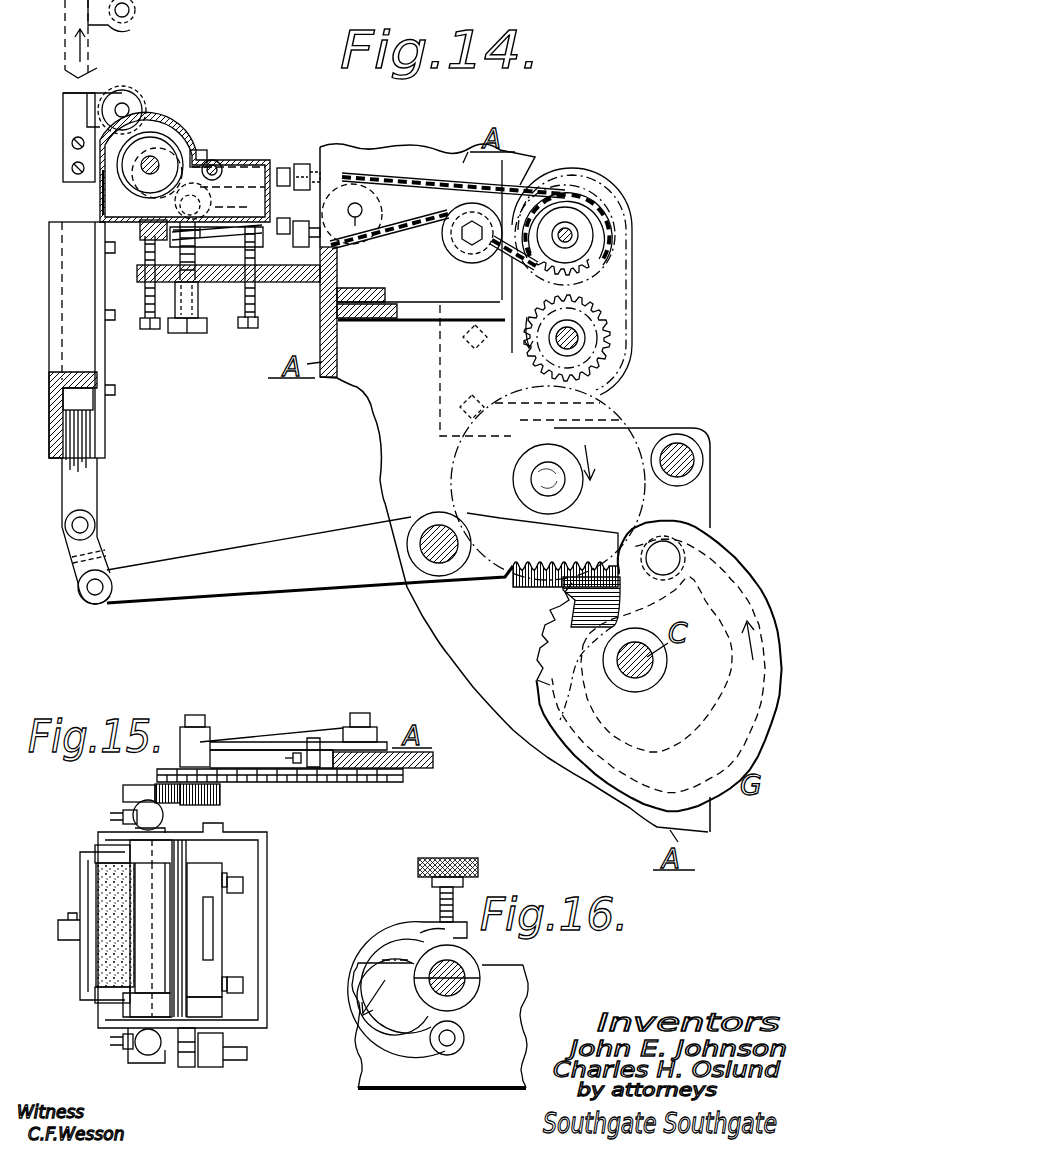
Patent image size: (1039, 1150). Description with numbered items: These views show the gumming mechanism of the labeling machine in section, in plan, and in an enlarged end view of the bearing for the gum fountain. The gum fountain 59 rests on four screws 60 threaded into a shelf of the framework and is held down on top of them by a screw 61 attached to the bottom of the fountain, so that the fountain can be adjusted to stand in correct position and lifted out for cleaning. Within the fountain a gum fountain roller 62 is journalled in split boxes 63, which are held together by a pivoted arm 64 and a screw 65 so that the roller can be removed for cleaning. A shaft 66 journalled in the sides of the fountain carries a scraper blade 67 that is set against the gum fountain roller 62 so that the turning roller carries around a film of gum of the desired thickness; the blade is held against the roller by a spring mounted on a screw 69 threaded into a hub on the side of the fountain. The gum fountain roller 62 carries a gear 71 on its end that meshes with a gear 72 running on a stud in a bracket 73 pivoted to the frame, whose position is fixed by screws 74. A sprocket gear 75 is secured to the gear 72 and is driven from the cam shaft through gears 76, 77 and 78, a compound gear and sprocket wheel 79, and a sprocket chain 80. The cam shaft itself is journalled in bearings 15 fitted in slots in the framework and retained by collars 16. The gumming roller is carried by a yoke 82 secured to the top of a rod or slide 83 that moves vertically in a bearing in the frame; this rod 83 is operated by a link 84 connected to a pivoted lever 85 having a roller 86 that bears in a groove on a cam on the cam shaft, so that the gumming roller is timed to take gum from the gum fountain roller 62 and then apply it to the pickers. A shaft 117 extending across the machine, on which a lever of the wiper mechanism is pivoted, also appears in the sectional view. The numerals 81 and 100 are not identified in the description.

In FIG. 14, the bearings 15 is at (168, 56).
In FIG. 15, the collars 16 is at (154, 1086).
In FIG. 14, the gum fountain 59 is at (267, 167).
In FIG. 15, the gum fountain 59 is at (267, 870).
In FIG. 16, the gum fountain 59 is at (527, 1020).
In FIG. 14, the screws 60 is at (145, 296).
In FIG. 14, the screw 61 is at (197, 258).
In FIG. 14, the gum fountain roller 62 is at (172, 127).
In FIG. 15, the gum fountain roller 62 is at (183, 862).
In FIG. 16, the split boxes 63 is at (472, 993).
In FIG. 15, the pivoted arm 64 is at (110, 817).
In FIG. 16, the pivoted arm 64 is at (403, 940).
In FIG. 15, the screw 65 is at (113, 1065).
In FIG. 16, the screw 65 is at (440, 900).
In FIG. 14, the shaft 66 is at (214, 167).
In FIG. 15, the shaft 66 is at (215, 913).
In FIG. 14, the scraper blade 67 is at (207, 143).
In FIG. 15, the scraper blade 67 is at (193, 942).
In FIG. 15, the screw 69 is at (188, 1062).
In FIG. 14, the gear 71 is at (117, 188).
In FIG. 15, the gear 71 is at (126, 792).
In FIG. 14, the gear 72 is at (225, 202).
In FIG. 15, the gear 72 is at (221, 797).
In FIG. 14, the bracket 73 is at (358, 312).
In FIG. 15, the bracket 73 is at (222, 735).
In FIG. 14, the screws 74 is at (298, 205).
In FIG. 15, the screws 74 is at (292, 758).
In FIG. 15, the sprocket gear 75 is at (269, 753).
In FIG. 14, the gear 76 is at (562, 632).
In FIG. 14, the gear 77 is at (607, 433).
In FIG. 14, the gear 78 is at (605, 332).
In FIG. 14, the compound gear and sprocket wheel 79 is at (600, 218).
In FIG. 14, the sprocket chain 80 is at (416, 212).
In FIG. 15, the sprocket chain 80 is at (325, 782).
In FIG. 14, the brush roller 81 is at (126, 90).
In FIG. 15, the brush roller 81 is at (95, 880).
In FIG. 14, the yoke 82 is at (103, 110).
In FIG. 15, the yoke 82 is at (85, 963).
In FIG. 14, the rod or slide 83 is at (92, 463).
In FIG. 14, the link 84 is at (103, 533).
In FIG. 14, the pivoted lever 85 is at (207, 557).
In FIG. 14, the roller 86 is at (683, 560).
In FIG. 14, the pin 100 is at (700, 458).
In FIG. 14, the shaft 117 is at (425, 530).